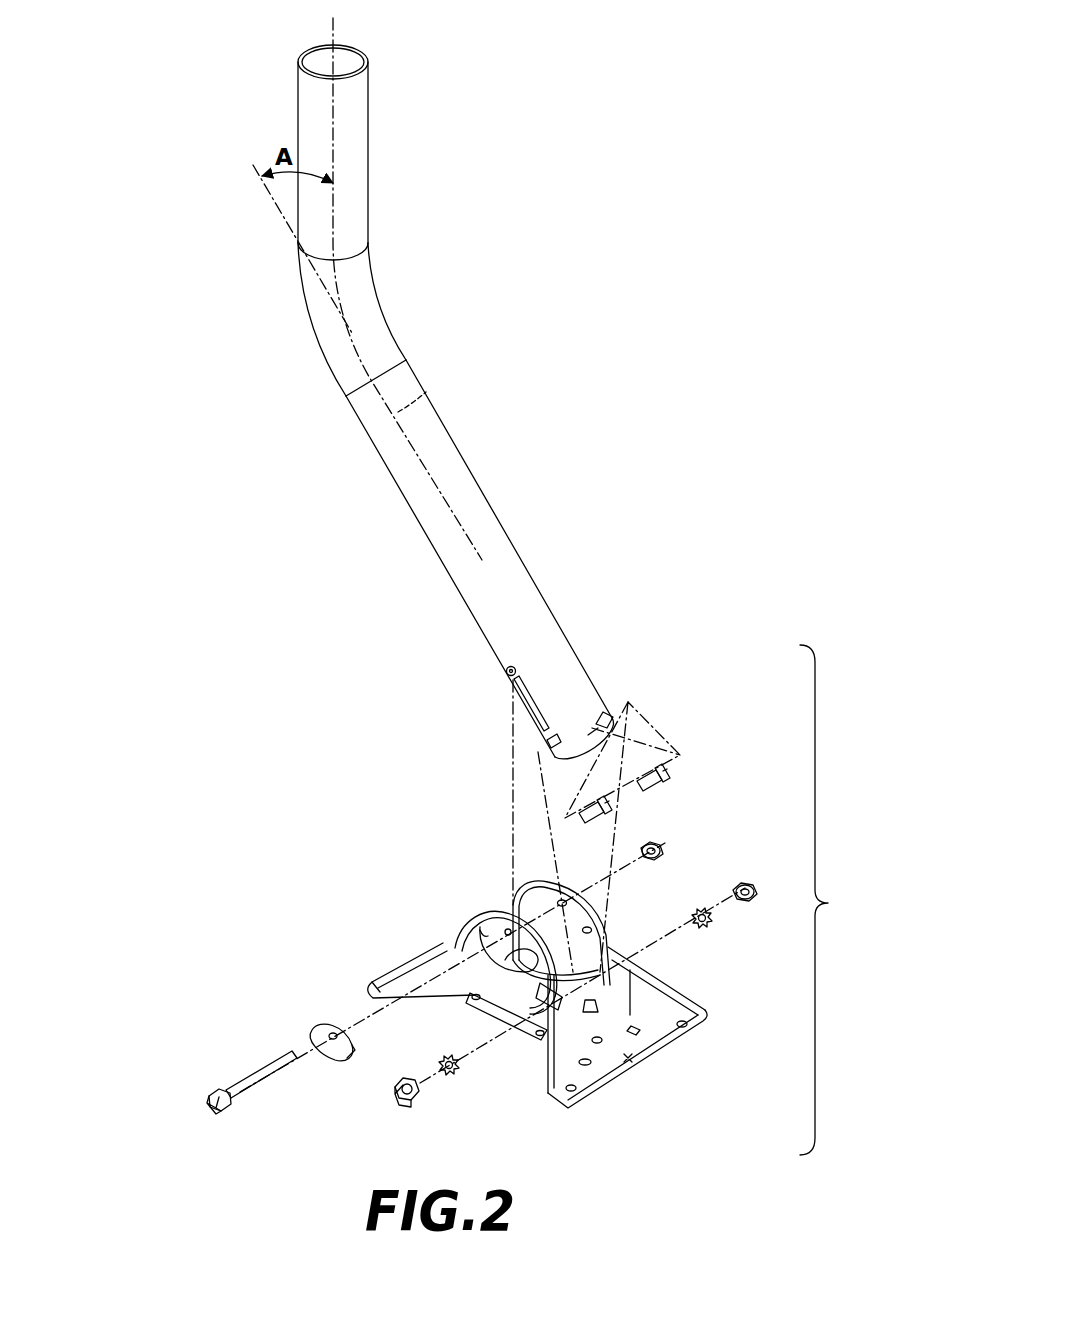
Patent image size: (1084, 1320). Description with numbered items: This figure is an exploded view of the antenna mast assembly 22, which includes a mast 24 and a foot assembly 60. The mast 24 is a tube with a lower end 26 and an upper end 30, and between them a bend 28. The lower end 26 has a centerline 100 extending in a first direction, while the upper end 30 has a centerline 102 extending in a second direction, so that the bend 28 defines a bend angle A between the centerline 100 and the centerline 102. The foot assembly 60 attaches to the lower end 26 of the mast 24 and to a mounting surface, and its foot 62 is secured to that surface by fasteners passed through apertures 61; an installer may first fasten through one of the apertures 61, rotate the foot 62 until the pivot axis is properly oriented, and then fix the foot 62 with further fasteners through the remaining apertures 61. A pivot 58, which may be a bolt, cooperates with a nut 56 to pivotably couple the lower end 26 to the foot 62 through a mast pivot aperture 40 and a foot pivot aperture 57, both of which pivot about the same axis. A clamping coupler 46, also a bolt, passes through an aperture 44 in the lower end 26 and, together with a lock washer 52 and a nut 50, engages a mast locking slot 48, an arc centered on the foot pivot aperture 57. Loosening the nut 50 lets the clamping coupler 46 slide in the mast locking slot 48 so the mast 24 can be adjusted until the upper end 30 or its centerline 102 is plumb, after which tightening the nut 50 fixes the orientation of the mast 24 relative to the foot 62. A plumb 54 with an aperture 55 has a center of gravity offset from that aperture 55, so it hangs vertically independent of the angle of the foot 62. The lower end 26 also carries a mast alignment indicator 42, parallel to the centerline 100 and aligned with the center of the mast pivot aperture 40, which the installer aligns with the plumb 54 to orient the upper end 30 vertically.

The antenna mast assembly 22 is at (660, 279).
The mast 24 is at (526, 386).
The lower end 26 is at (495, 527).
The bend 28 is at (363, 305).
The upper end 30 is at (357, 162).
The mast pivot aperture 40 is at (506, 671).
The mast alignment indicator 42 is at (532, 708).
The aperture 44 is at (548, 745).
The clamping coupler 46 is at (598, 816).
The mast locking slot 48 is at (447, 948).
The nut 50 is at (417, 1097).
The lock washer 52 is at (460, 1078).
The plumb 54 is at (325, 1027).
The aperture 55 is at (338, 1038).
The nut 56 is at (664, 847).
The foot pivot aperture 57 is at (558, 903).
The pivot 58 is at (262, 1077).
The foot assembly 60 is at (830, 900).
The apertures 61 is at (687, 1025).
The foot 62 is at (694, 1074).
The centerline 100 is at (426, 392).
The centerline 102 is at (332, 133).